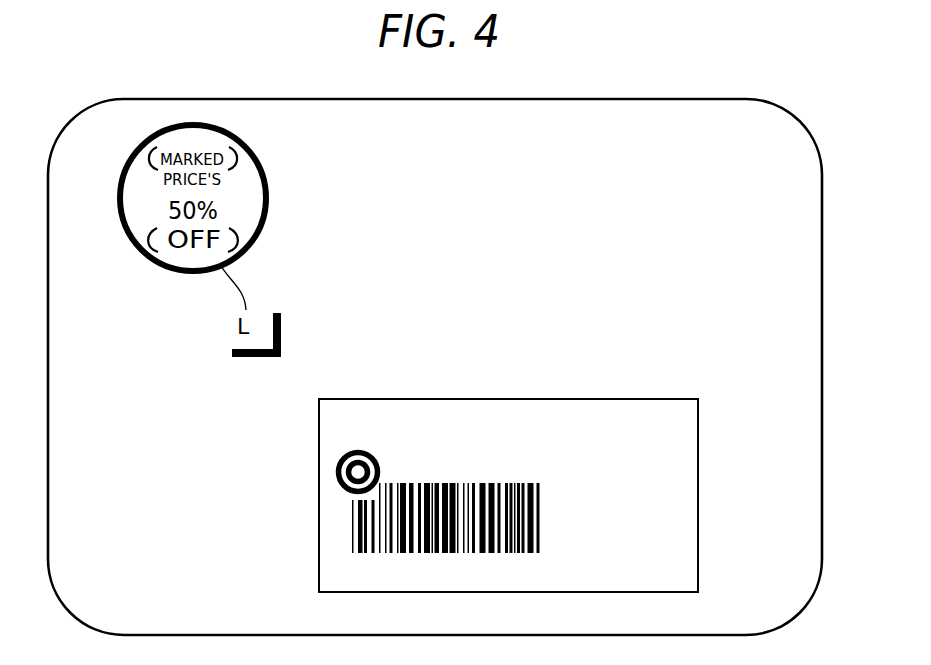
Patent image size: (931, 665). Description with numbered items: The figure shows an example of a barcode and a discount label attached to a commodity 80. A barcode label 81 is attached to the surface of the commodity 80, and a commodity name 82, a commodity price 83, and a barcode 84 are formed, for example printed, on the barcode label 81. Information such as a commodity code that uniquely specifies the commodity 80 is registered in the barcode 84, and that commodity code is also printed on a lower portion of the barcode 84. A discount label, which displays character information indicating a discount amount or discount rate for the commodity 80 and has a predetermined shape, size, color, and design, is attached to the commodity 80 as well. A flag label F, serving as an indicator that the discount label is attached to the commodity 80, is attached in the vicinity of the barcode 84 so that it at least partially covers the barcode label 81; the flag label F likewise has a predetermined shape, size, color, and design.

The commodity 80 is at (735, 98).
The barcode label 81 is at (618, 398).
The commodity name 82 is at (464, 412).
The commodity price 83 is at (678, 527).
The barcode 84 is at (352, 513).
The flag label F is at (336, 477).